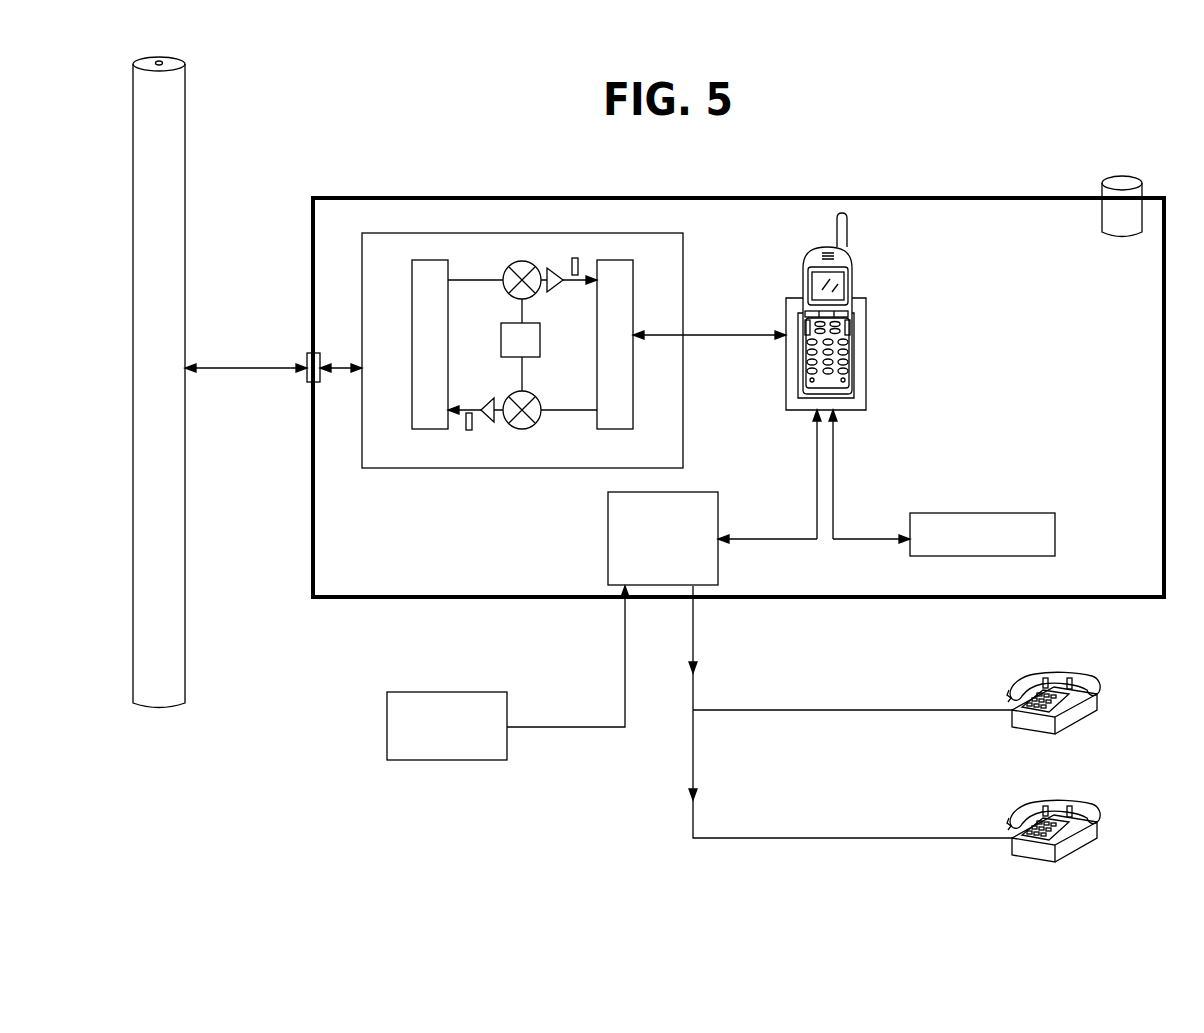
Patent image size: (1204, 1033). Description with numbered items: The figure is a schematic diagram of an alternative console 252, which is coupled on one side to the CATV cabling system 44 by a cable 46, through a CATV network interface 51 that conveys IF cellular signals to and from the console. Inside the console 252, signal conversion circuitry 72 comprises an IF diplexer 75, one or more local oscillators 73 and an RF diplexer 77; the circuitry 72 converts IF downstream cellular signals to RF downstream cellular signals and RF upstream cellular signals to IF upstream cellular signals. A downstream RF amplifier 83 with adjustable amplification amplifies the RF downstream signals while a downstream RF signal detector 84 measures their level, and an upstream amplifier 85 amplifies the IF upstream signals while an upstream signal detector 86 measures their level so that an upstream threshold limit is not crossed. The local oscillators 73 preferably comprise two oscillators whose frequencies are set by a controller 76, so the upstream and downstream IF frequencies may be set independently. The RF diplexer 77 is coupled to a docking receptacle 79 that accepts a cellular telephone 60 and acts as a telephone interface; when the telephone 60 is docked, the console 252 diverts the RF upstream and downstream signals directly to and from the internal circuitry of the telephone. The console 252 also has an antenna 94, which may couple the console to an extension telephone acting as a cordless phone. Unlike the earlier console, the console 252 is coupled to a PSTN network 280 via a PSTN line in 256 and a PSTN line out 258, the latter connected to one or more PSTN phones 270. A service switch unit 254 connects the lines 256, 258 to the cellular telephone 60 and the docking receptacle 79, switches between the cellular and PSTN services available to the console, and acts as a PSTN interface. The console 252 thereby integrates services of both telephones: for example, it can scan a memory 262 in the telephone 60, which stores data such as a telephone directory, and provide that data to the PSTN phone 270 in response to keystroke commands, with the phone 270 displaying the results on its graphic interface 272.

The CATV cabling system 44 is at (185, 535).
The cable 46 is at (236, 372).
The CATV network interface 51 is at (306, 355).
The console 252 is at (313, 262).
The signal conversion circuitry 72 is at (683, 413).
The IF diplexer 75 is at (412, 268).
The RF diplexer 77 is at (633, 268).
The local oscillator 73 is at (530, 358).
The downstream RF amplifier 83 is at (560, 262).
The downstream RF signal detector 84 is at (580, 258).
The upstream amplifier 85 is at (496, 400).
The upstream signal detector 86 is at (463, 430).
The memory 262 is at (798, 333).
The docking receptacle 79 is at (866, 333).
The cellular telephone 60 is at (848, 265).
The antenna 94 is at (1102, 222).
The controller 76 is at (922, 513).
The service switch unit 254 is at (607, 538).
The PSTN line in 256 is at (557, 730).
The PSTN line out 258 is at (693, 695).
The PSTN network 280 is at (432, 760).
The PSTN phone 270 is at (1058, 665).
The graphic interface 272 is at (1102, 674).